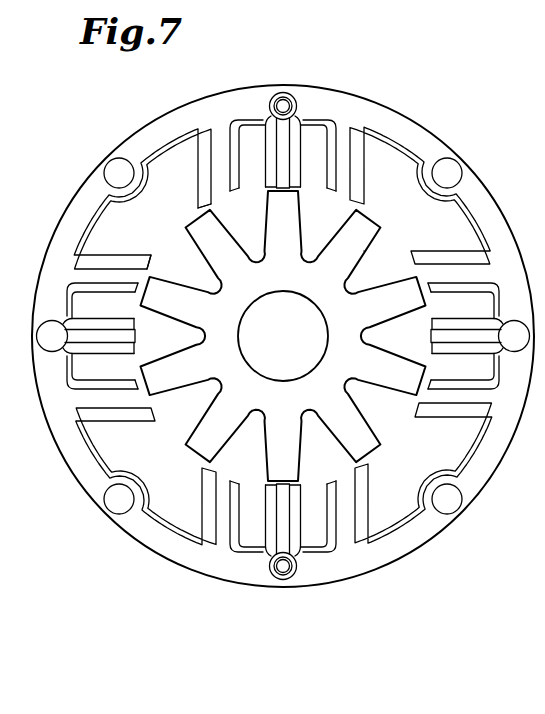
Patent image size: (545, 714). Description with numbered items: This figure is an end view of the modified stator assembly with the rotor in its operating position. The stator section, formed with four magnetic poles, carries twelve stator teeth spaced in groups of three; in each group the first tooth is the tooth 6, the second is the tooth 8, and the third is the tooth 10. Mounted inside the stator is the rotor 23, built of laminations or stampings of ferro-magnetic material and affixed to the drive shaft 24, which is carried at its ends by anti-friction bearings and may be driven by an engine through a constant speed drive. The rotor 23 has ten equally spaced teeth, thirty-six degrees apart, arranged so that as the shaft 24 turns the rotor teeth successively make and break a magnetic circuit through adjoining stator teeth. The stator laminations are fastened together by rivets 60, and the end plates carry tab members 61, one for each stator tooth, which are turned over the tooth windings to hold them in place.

The first tooth of the auxiliary stator section 6 is at (199, 197).
The second tooth of the auxiliary stator section 8 is at (296, 168).
The third tooth of the auxiliary stator section 10 is at (366, 198).
The rotor 23 is at (296, 278).
The drive shaft 24 is at (297, 346).
The rivets 60 is at (286, 94).
The tab members 61 is at (212, 163).